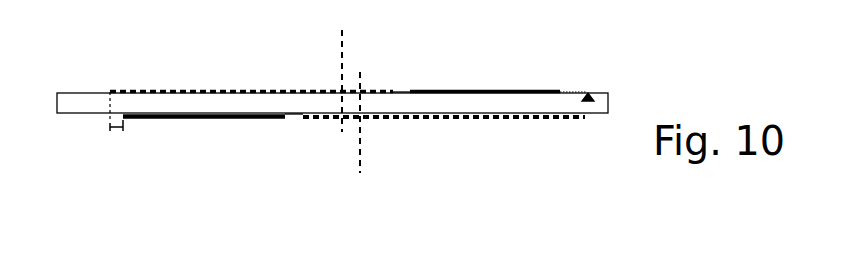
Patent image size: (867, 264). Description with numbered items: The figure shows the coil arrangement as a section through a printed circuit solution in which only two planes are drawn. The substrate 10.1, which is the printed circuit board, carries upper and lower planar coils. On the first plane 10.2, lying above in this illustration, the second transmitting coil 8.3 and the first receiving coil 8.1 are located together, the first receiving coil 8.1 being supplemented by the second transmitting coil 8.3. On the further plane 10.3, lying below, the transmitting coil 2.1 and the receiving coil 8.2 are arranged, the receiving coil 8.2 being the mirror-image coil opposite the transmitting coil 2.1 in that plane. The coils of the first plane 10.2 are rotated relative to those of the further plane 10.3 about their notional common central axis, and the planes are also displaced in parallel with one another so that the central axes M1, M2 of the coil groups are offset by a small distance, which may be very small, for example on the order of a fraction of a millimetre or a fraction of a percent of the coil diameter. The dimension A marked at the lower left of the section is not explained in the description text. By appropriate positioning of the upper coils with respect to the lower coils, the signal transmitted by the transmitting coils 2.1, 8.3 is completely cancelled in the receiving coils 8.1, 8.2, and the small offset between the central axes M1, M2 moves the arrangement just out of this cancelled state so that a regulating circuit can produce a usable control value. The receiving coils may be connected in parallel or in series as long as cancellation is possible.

The first receiving coil 8.1 is at (208, 90).
The receiving coil 8.2 is at (450, 120).
The second transmitting coil 8.3 is at (483, 90).
The transmitting coil 2.1 is at (205, 120).
The substrate 10.1 is at (592, 93).
The first plane 10.2 is at (400, 90).
The further plane 10.3 is at (297, 120).
The distance A is at (115, 130).
The central axis M1 is at (342, 36).
The central axis M2 is at (362, 150).